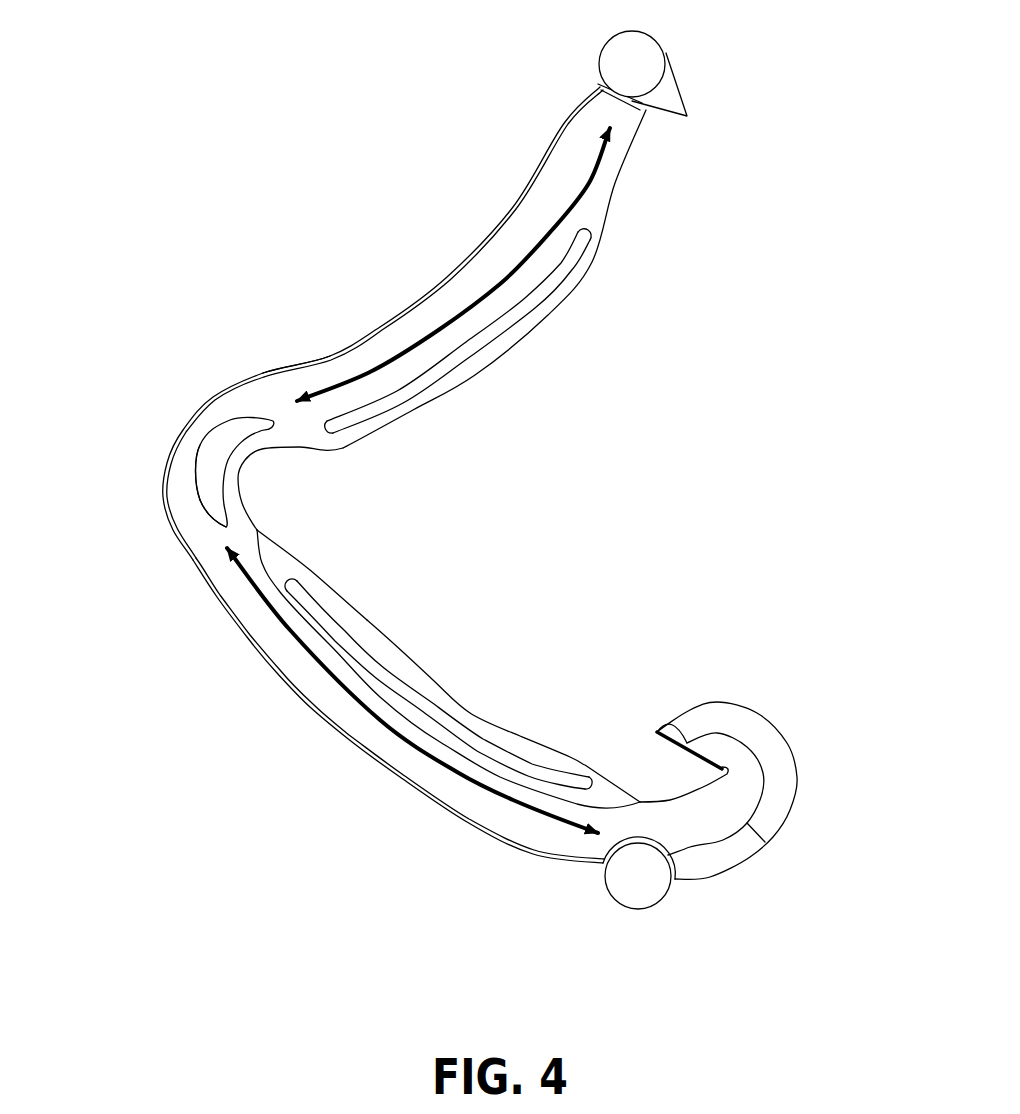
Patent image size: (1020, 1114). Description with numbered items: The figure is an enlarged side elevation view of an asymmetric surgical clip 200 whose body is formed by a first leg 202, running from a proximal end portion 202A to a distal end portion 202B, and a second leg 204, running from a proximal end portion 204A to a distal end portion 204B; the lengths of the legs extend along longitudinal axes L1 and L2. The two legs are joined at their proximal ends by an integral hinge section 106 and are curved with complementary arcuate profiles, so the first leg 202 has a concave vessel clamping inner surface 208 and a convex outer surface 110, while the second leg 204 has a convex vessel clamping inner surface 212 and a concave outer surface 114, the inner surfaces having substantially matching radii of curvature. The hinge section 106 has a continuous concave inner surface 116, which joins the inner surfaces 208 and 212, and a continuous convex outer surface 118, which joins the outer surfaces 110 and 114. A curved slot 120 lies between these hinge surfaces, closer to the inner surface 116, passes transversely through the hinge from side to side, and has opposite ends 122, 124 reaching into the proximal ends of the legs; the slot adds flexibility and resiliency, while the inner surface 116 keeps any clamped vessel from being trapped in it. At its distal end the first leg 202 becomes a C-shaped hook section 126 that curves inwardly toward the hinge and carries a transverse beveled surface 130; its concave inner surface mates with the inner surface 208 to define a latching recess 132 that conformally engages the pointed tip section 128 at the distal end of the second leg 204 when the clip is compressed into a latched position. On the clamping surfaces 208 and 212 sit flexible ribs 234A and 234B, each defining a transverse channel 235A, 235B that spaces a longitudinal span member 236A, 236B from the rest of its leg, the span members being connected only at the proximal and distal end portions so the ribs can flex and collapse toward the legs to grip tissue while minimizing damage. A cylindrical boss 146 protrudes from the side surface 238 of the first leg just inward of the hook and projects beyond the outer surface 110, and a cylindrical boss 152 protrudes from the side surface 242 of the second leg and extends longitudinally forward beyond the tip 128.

The asymmetric surgical clip 200 is at (790, 285).
The integral hinge section 106 is at (140, 458).
The convex outer surface 110 is at (494, 833).
The concave outer surface 114 is at (470, 237).
The continuous concave inner surface 116 is at (238, 470).
The continuous convex outer surface 118 is at (175, 433).
The curved slot 120 is at (212, 468).
The slot end 122 is at (210, 518).
The slot end 124 is at (245, 430).
The C-shaped hook section 126 is at (785, 735).
The pointed tip section 128 is at (683, 98).
The transverse beveled surface 130 is at (662, 735).
The latching recess 132 is at (718, 780).
The cylindrical boss 146 is at (650, 888).
The cylindrical boss 152 is at (608, 58).
The first leg 202 is at (362, 838).
The proximal end portion 202A is at (185, 645).
The distal end portion 202B is at (580, 925).
The second leg 204 is at (392, 232).
The proximal end portion 204A is at (293, 340).
The distal end portion 204B is at (553, 86).
The concave vessel clamping inner surface 208 is at (525, 640).
The convex vessel clamping inner surface 212 is at (537, 351).
The flexible rib 234A is at (425, 675).
The flexible rib 234B is at (480, 373).
The channel 235A is at (365, 665).
The channel 235B is at (387, 407).
The longitudinal span member 236A is at (510, 740).
The longitudinal span member 236B is at (553, 293).
The side surface 238 is at (345, 715).
The side surface 242 is at (397, 340).
The longitudinal axis L1 is at (450, 770).
The longitudinal axis L2 is at (598, 166).